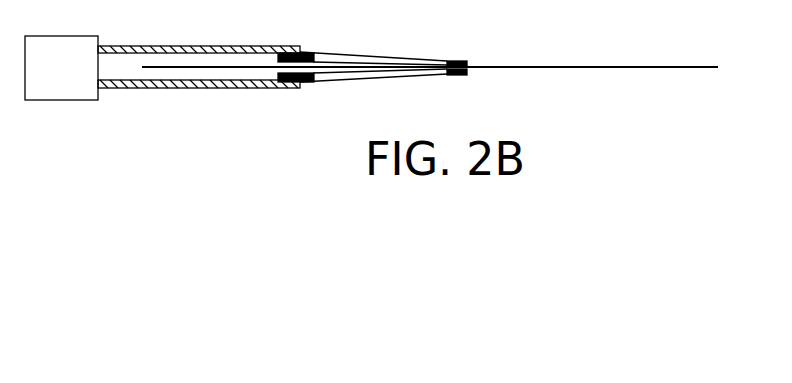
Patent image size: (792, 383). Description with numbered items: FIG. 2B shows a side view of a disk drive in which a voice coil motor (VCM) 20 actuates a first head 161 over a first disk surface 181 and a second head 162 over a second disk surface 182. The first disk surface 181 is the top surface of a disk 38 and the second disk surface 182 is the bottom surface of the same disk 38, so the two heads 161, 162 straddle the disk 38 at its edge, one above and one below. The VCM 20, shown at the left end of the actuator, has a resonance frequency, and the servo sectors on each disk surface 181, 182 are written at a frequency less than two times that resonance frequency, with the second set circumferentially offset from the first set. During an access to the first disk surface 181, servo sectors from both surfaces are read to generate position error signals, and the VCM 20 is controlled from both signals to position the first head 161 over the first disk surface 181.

The voice coil motor (VCM) 20 is at (63, 36).
The disk 38 is at (567, 66).
The first head 161 is at (455, 57).
The second head 162 is at (455, 78).
The first disk surface 181 is at (647, 63).
The second disk surface 182 is at (647, 72).